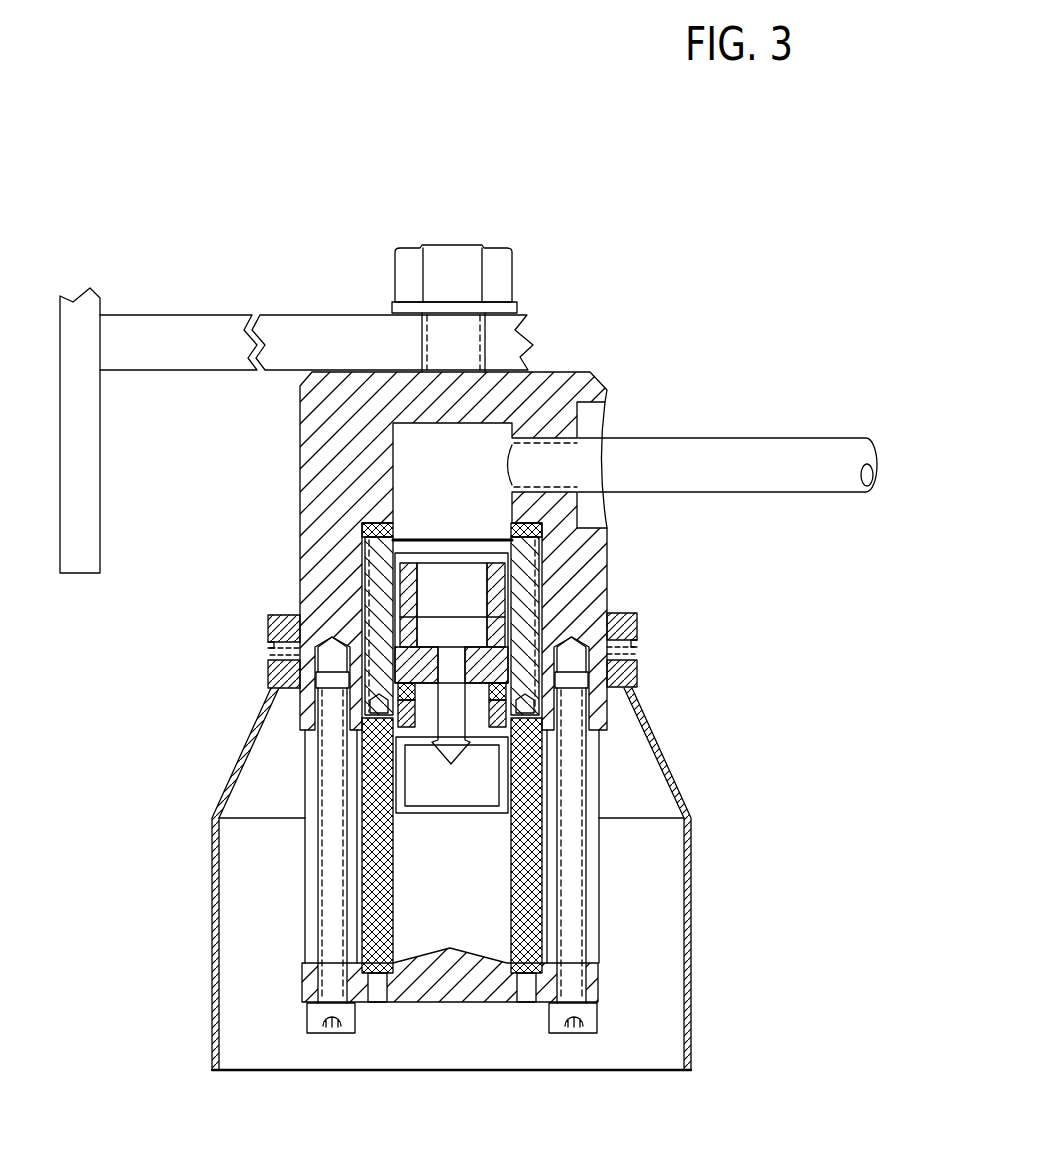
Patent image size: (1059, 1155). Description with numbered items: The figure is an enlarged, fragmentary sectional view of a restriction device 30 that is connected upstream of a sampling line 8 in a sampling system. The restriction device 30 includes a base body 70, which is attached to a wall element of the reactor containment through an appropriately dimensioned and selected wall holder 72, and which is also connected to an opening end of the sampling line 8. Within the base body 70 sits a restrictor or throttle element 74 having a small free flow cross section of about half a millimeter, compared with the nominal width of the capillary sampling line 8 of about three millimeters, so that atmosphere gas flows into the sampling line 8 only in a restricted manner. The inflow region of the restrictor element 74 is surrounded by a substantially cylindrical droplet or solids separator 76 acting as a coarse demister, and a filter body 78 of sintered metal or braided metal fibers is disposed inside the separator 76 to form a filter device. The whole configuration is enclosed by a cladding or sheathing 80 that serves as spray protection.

The sampling line 8 is at (735, 437).
The restriction device 30 is at (630, 283).
The base body 70 is at (562, 370).
The wall holder 72 is at (185, 315).
The restrictor element 74 is at (470, 756).
The separator 76 is at (525, 910).
The filter body 78 is at (505, 790).
The sheathing 80 is at (692, 990).